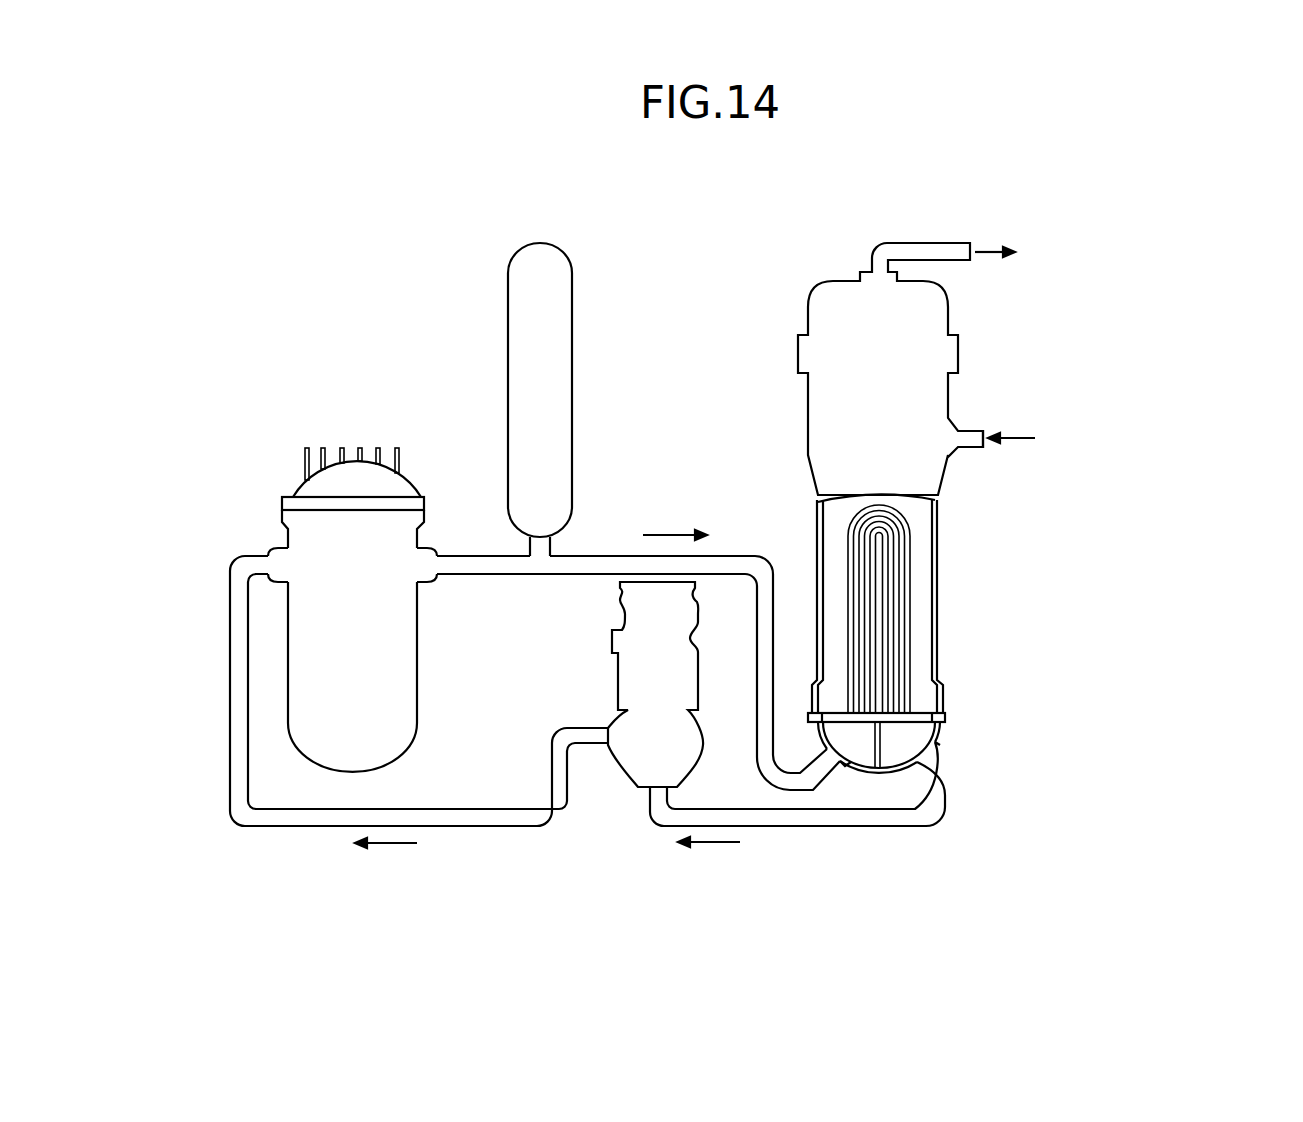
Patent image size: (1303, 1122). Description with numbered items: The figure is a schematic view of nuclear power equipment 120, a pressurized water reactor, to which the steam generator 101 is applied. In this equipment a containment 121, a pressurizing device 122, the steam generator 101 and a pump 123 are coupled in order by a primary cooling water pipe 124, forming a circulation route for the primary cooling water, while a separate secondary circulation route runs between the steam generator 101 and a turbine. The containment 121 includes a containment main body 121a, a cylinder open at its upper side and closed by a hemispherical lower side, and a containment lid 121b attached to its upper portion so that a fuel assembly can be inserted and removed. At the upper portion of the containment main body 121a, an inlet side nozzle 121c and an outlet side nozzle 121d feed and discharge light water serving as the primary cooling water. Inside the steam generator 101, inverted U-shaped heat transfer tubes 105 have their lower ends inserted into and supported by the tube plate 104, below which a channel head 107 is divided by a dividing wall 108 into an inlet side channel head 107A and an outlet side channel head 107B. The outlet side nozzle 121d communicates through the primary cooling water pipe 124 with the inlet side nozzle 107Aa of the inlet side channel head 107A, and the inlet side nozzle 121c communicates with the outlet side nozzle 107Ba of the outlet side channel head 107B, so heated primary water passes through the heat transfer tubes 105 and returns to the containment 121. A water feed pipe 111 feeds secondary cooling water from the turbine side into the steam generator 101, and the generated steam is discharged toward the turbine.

The steam generator 101 is at (833, 280).
The tube plate 104 is at (918, 712).
The heat transfer tube 105 is at (912, 608).
The channel head 107 is at (885, 752).
The inlet side channel head 107A is at (853, 750).
The inlet side nozzle 107Aa is at (800, 745).
The outlet side channel head 107B is at (910, 730).
The outlet side nozzle 107Ba is at (933, 743).
The dividing wall 108 is at (895, 775).
The water feed pipe 111 is at (967, 430).
The nuclear power equipment 120 is at (224, 271).
The containment 121 is at (297, 480).
The containment main body 121a is at (388, 670).
The containment lid 121b is at (400, 495).
The inlet side nozzle 121c is at (280, 557).
The outlet side nozzle 121d is at (427, 577).
The pressurizing device 122 is at (508, 298).
The pump 123 is at (612, 640).
The primary cooling water pipe 124 is at (735, 555).